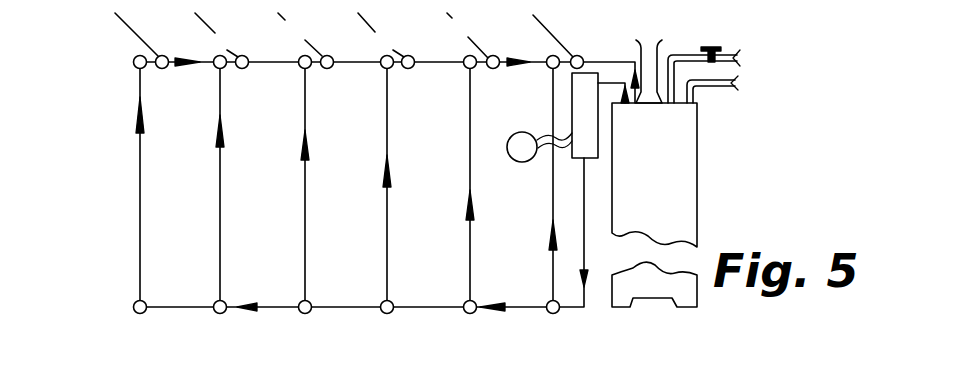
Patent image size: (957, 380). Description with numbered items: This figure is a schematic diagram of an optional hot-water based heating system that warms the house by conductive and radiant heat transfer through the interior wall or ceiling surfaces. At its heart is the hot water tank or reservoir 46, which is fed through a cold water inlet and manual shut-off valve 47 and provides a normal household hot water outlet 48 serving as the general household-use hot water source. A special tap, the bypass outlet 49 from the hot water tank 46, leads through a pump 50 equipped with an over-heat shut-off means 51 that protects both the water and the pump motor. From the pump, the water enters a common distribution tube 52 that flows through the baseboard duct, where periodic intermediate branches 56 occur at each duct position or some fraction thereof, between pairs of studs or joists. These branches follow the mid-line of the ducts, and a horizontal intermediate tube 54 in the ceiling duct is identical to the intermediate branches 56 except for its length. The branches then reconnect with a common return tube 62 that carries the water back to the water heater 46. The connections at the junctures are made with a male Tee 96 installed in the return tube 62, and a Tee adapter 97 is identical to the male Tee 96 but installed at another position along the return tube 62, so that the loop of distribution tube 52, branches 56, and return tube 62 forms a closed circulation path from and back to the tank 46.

The hot water tank 46 is at (685, 205).
The cold water inlet and manual shut-off valve 47 is at (713, 48).
The household hot water outlet 48 is at (713, 85).
The bypass outlet 49 is at (612, 82).
The pump 50 is at (572, 91).
The over-heat shut-off means 51 is at (523, 132).
The common distribution tube 52 is at (338, 308).
The horizontal intermediate tube 54 is at (135, 38).
The intermediate branch 56 is at (387, 202).
The common return tube 62 is at (350, 62).
The male Tee 96 is at (218, 56).
The Tee adapter 97 is at (247, 67).